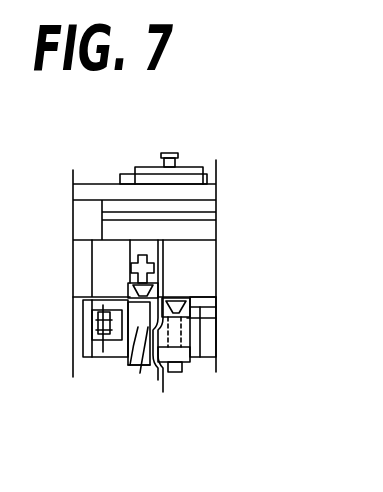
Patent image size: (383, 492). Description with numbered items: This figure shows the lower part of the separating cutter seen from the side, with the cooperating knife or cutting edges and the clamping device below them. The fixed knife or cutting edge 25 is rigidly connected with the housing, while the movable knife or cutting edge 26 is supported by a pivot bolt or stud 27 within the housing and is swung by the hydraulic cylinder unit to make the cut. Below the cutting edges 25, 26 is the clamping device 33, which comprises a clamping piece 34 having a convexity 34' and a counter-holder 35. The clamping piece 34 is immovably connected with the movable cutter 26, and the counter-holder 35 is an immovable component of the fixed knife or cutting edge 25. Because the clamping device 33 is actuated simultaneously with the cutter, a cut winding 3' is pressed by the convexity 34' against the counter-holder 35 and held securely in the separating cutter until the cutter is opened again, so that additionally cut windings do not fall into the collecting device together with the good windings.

The movable knife or cutting edge 26 is at (200, 276).
The pivot bolt or stud 27 is at (190, 176).
The cut winding 3' is at (210, 328).
The knife or cutting edge 25 is at (197, 303).
The counter-holder 35 is at (185, 330).
The clamping piece 34 is at (89, 365).
The convexity 34' is at (138, 400).
The clamping device 33 is at (130, 376).